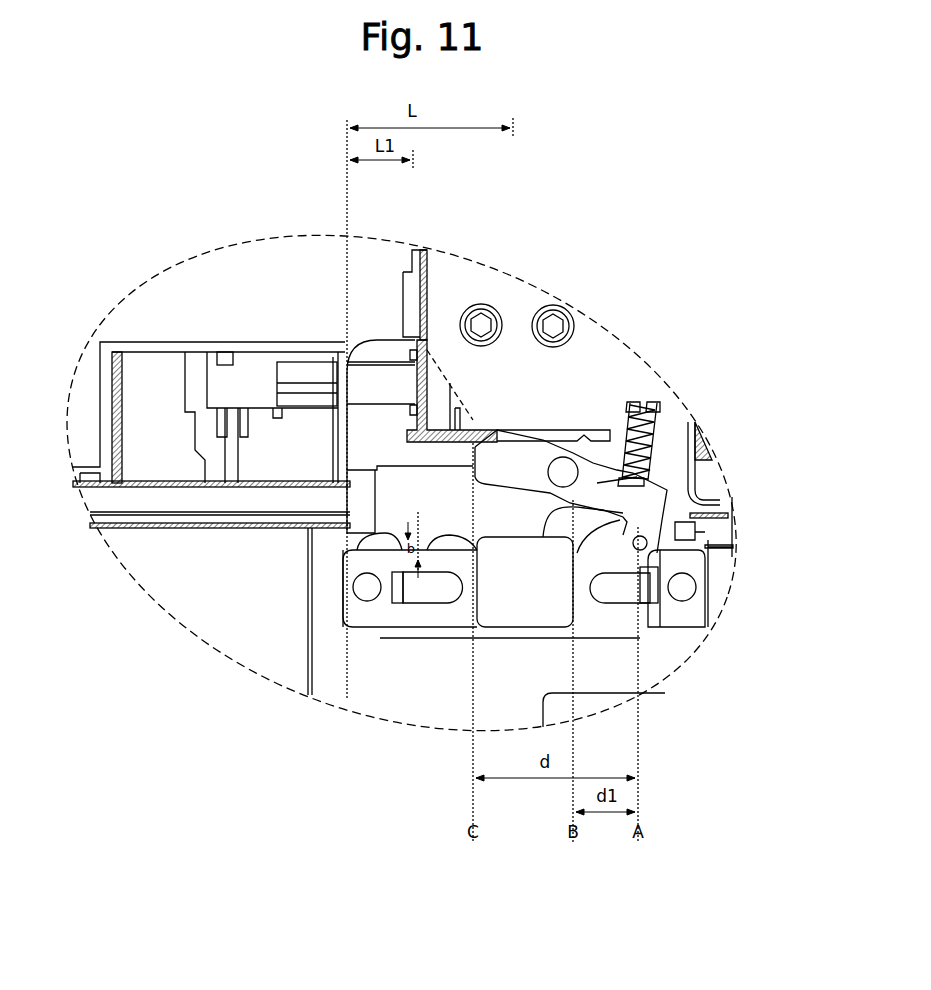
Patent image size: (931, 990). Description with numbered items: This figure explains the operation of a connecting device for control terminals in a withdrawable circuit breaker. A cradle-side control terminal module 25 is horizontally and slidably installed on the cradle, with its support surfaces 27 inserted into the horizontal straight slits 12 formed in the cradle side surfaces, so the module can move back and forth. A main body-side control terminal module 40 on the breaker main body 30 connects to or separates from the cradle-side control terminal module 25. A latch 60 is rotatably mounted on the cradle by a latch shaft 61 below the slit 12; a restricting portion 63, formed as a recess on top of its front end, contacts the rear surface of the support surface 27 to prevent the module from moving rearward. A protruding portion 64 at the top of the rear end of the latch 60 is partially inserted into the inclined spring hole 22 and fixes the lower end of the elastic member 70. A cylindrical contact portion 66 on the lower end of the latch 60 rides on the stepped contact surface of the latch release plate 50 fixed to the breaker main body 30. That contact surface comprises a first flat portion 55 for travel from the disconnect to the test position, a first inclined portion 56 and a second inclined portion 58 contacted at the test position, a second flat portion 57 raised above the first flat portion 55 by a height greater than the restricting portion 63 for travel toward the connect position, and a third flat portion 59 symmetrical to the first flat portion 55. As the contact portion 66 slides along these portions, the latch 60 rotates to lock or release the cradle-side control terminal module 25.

The slit 12 is at (598, 428).
The spring hole 22 is at (624, 430).
The cradle-side control terminal module 25 is at (378, 375).
The support surface 27 is at (478, 303).
The breaker main body 30 is at (228, 620).
The main body-side control terminal module 40 is at (243, 382).
The latch release plate 50 is at (441, 627).
The first flat portion 55 is at (694, 540).
The first inclined portion 56 is at (687, 517).
The second flat portion 57 is at (553, 502).
The second inclined portion 58 is at (435, 537).
The third flat portion 59 is at (345, 625).
The latch 60 is at (655, 465).
The latch shaft 61 is at (560, 457).
The restricting portion 63 is at (488, 427).
The protruding portion 64 is at (637, 477).
The contact portion 66 is at (695, 548).
The elastic member 70 is at (660, 427).